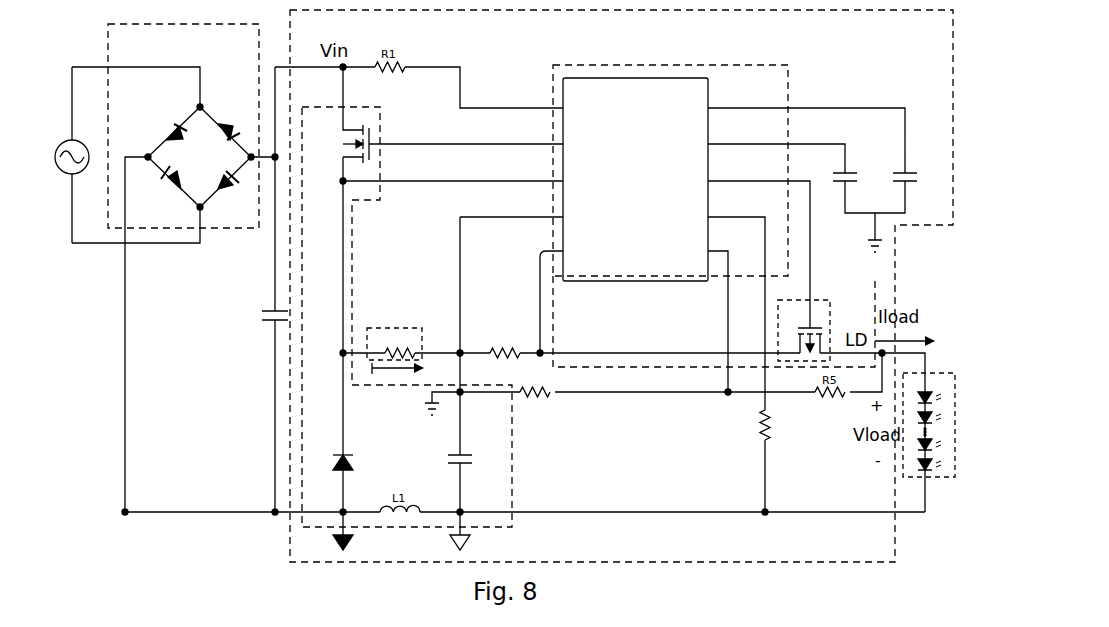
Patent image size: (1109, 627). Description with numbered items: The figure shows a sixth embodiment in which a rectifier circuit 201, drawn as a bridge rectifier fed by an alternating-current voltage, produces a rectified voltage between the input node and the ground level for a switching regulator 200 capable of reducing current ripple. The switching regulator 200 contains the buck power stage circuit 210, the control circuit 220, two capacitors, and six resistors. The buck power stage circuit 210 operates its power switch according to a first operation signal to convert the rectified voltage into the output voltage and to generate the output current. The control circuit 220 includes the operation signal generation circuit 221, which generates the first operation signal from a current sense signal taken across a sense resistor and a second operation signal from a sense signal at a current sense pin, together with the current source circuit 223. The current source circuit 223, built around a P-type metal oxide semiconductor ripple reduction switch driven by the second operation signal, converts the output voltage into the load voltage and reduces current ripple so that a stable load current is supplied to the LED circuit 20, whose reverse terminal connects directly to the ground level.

The LED circuit 20 is at (930, 373).
The switching regulator 200 is at (621, 286).
The rectifier circuit 201 is at (166, 269).
The buck power stage circuit 210 is at (591, 311).
The control circuit 220 is at (746, 290).
The operation signal generation circuit 221 is at (635, 179).
The current source circuit 223 is at (812, 300).